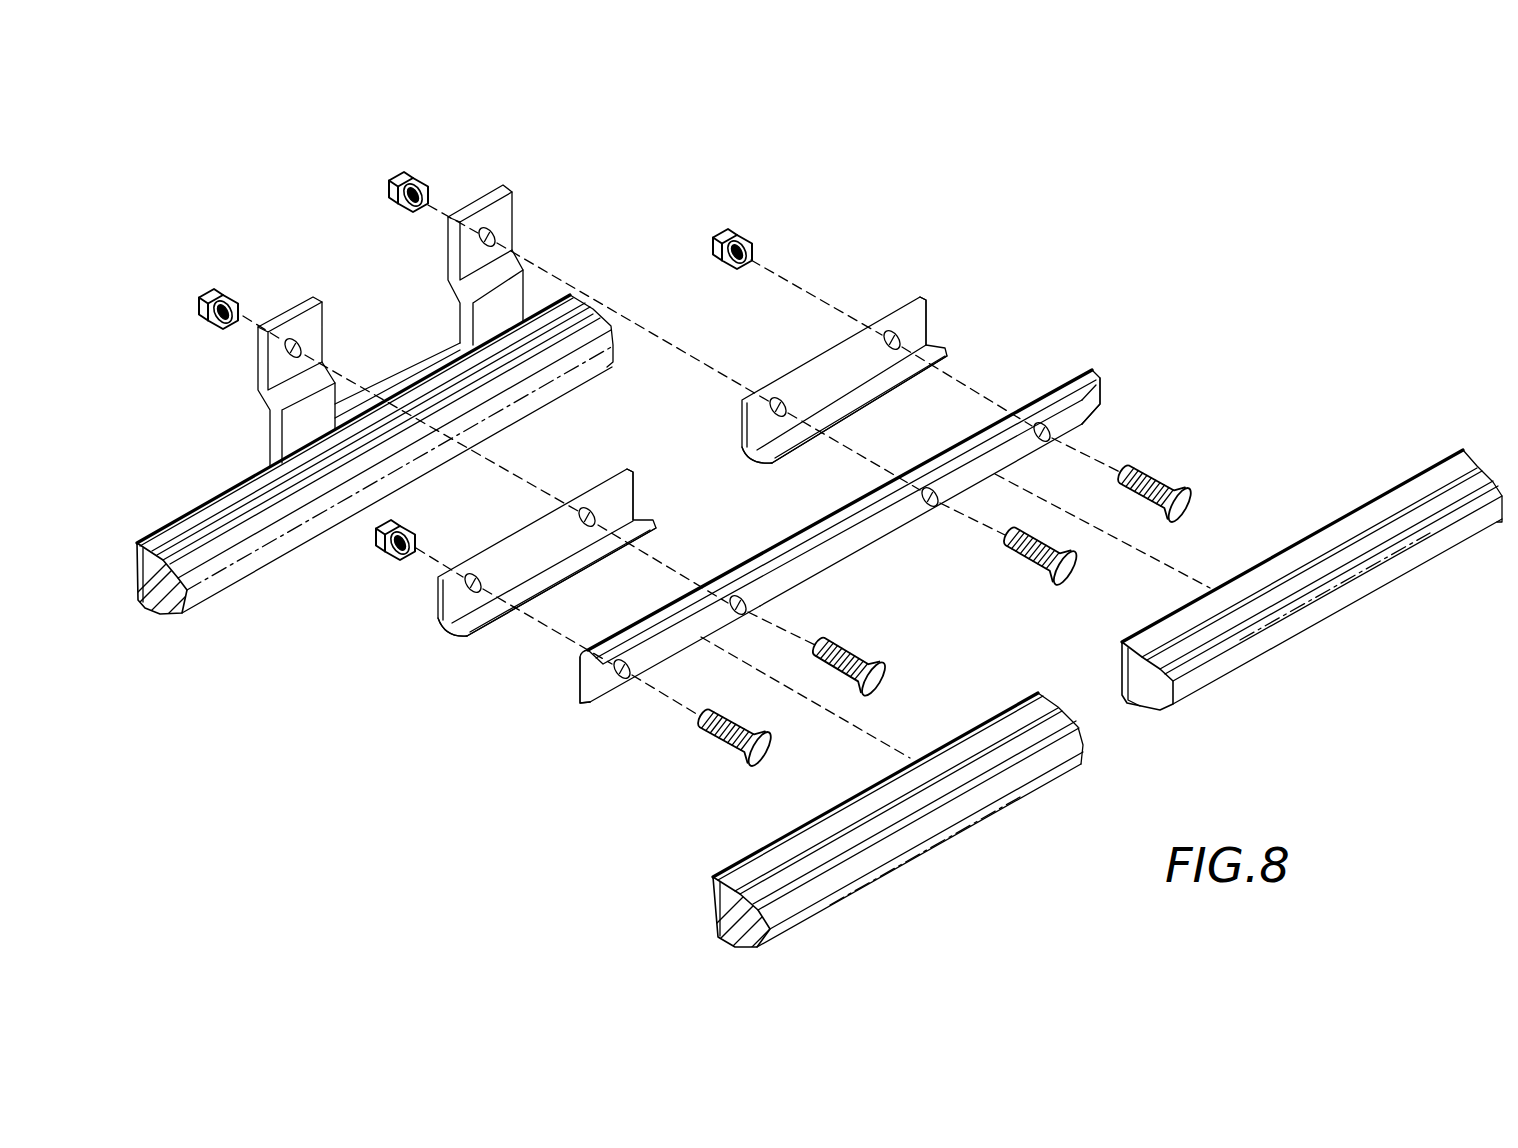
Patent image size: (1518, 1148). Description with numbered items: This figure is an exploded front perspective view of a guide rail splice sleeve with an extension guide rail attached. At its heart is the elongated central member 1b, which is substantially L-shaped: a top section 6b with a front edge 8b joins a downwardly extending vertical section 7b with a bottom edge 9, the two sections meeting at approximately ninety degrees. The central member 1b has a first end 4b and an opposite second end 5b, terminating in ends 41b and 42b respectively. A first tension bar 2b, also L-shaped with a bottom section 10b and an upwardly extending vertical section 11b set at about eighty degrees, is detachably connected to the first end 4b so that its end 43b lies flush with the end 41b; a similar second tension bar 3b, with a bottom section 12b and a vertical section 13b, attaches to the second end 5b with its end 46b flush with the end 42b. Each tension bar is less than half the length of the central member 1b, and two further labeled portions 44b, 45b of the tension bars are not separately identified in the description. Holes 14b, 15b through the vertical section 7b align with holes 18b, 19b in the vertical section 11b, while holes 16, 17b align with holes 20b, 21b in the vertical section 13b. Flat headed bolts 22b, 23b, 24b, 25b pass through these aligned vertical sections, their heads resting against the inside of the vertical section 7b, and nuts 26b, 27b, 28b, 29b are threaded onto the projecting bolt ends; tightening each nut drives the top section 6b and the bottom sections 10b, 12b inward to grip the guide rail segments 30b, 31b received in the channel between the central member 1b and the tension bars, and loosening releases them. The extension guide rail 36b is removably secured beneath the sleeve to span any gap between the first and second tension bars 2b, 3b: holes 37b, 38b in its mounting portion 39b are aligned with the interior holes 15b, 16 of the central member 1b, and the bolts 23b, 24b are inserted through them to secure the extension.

The central member 1b is at (874, 568).
The first tension bar 2b is at (556, 558).
The second tension bar 3b is at (848, 383).
The first end 4b is at (656, 628).
The second end 5b is at (997, 428).
The top section 6b is at (787, 553).
The vertical section 7b is at (600, 686).
The front edge 8b is at (1102, 388).
The bottom edge 9 is at (1018, 460).
The bottom section 10b is at (475, 617).
The vertical section 11b is at (540, 538).
The bottom section 12b is at (777, 445).
The vertical section 13b is at (843, 365).
The hole 14b is at (632, 663).
The hole 15b is at (748, 603).
The hole 16 is at (947, 488).
The hole 17b is at (1057, 428).
The hole 18b is at (480, 577).
The hole 19b is at (597, 507).
The hole 20b is at (790, 398).
The hole 21b is at (898, 333).
The flat headed bolt 22b is at (745, 724).
The flat headed bolt 23b is at (857, 656).
The flat headed bolt 24b is at (1047, 577).
The flat headed bolt 25b is at (1177, 482).
The nut 26b is at (383, 558).
The nut 27b is at (214, 291).
The nut 28b is at (402, 178).
The nut 29b is at (719, 236).
The guide rail segment 30b is at (915, 842).
The guide rail segment 31b is at (1318, 612).
The extension guide rail 36b is at (286, 382).
The hole 37b is at (302, 347).
The hole 38b is at (500, 233).
The mounting portion 39b is at (369, 307).
The end 41b is at (597, 700).
The end 42b is at (1080, 413).
The end 43b is at (437, 626).
The bracket end 44b is at (623, 498).
The bracket bend 45b is at (750, 442).
The end 46b is at (918, 337).